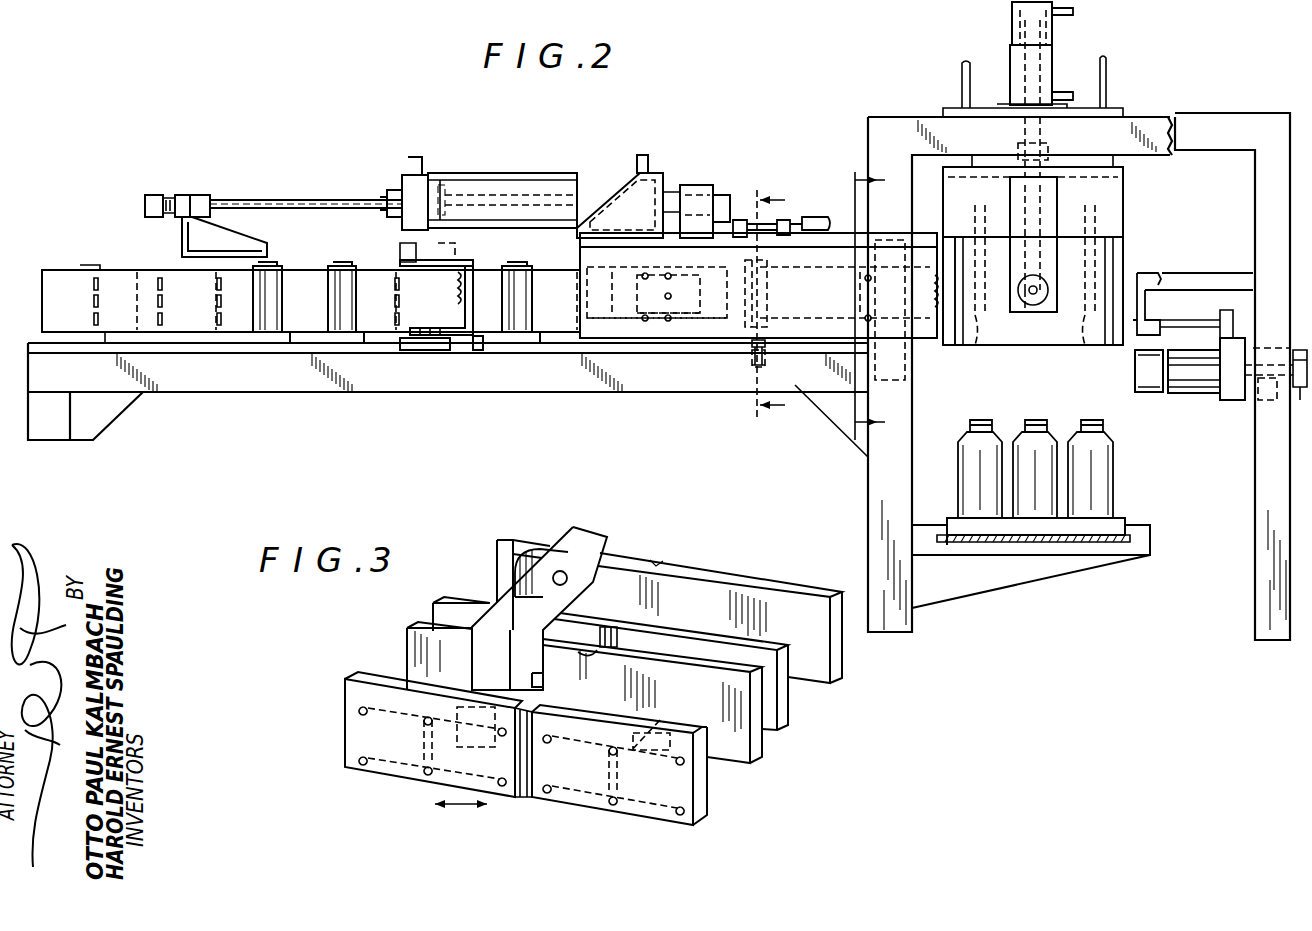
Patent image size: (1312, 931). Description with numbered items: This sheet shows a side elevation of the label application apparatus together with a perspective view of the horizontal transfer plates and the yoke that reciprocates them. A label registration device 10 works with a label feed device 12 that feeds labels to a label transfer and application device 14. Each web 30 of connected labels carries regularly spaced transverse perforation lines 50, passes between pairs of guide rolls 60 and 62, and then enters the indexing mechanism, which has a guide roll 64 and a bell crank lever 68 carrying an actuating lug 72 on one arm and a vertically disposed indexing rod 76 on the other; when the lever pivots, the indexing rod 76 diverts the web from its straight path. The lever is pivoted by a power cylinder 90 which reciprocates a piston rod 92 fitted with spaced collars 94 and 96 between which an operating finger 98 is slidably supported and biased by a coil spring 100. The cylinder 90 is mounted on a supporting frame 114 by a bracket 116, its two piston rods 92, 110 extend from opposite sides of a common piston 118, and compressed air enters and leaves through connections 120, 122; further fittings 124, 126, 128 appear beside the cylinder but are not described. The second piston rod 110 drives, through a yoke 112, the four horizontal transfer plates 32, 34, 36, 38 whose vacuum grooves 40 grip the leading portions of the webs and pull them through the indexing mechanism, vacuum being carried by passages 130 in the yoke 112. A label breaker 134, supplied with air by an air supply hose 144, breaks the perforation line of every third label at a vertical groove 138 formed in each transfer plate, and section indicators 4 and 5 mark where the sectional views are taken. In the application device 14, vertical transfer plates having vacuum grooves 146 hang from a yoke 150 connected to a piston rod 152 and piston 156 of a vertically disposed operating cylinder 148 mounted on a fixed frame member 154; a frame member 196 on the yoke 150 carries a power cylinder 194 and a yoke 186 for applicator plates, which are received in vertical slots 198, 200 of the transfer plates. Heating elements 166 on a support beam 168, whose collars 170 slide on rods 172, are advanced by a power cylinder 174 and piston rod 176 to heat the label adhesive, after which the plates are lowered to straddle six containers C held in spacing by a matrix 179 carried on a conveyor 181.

In FIG. 2, the label registration device 10 is at (365, 178).
In FIG. 2, the label feed device 12 is at (852, 167).
In FIG. 2, the label transfer and application device 14 is at (1148, 98).
In FIG. 2, the web 30 is at (550, 315).
In FIG. 3, the horizontal transfer plate 32 is at (842, 674).
In FIG. 3, the horizontal transfer plate 34 is at (790, 727).
In FIG. 3, the horizontal transfer plate 36 is at (763, 758).
In FIG. 2, the horizontal transfer plate 38 is at (628, 335).
In FIG. 3, the horizontal transfer plate 38 is at (703, 817).
In FIG. 2, the vacuum grooves 40 is at (686, 335).
In FIG. 3, the vacuum grooves 40 is at (388, 768).
In FIG. 2, the perforation lines 50 is at (164, 300).
In FIG. 2, the guide roll 60 is at (273, 266).
In FIG. 2, the guide roll 62 is at (344, 266).
In FIG. 2, the guide roll 64 is at (412, 320).
In FIG. 2, the bell crank lever 68 is at (458, 260).
In FIG. 2, the actuating lug 72 is at (400, 246).
In FIG. 2, the indexing rod 76 is at (468, 290).
In FIG. 2, the power cylinder 90 is at (528, 172).
In FIG. 2, the piston rod 92 is at (288, 198).
In FIG. 2, the collar 94 is at (156, 195).
In FIG. 2, the collar 96 is at (203, 194).
In FIG. 2, the operating finger 98 is at (225, 235).
In FIG. 2, the coil spring 100 is at (170, 195).
In FIG. 2, the second piston rod 110 is at (672, 192).
In FIG. 2, the yoke 112 is at (700, 186).
In FIG. 3, the yoke 112 is at (588, 540).
In FIG. 2, the supporting frame 114 is at (590, 245).
In FIG. 2, the bracket 116 is at (615, 200).
In FIG. 2, the piston 118 is at (452, 172).
In FIG. 2, the connection 120 is at (412, 165).
In FIG. 2, the connection 122 is at (650, 160).
In FIG. 2, the hose fitting 124 is at (822, 217).
In FIG. 2, the section line 126 is at (757, 200).
In FIG. 2, the elbow fitting 128 is at (792, 235).
In FIG. 3, the passages 130 is at (747, 634).
In FIG. 2, the label breaker 134 is at (757, 370).
In FIG. 3, the groove 138 is at (667, 567).
In FIG. 2, the air supply hose 144 is at (768, 358).
In FIG. 2, the vacuum grooves 146 is at (1124, 218).
In FIG. 2, the operating cylinder 148 is at (1052, 65).
In FIG. 2, the yoke 150 is at (1035, 175).
In FIG. 2, the piston rod 152 is at (1010, 70).
In FIG. 2, the frame member 154 is at (1245, 112).
In FIG. 2, the piston 156 is at (1052, 32).
In FIG. 2, the heating elements 166 is at (1205, 395).
In FIG. 2, the support beam 168 is at (1238, 402).
In FIG. 2, the collars 170 is at (1240, 308).
In FIG. 2, the rods 172 is at (1213, 320).
In FIG. 2, the power cylinder 174 is at (1292, 395).
In FIG. 2, the piston rod 176 is at (1292, 440).
In FIG. 2, the matrix 179 is at (1062, 530).
In FIG. 2, the conveyor 181 is at (1112, 542).
In FIG. 2, the yoke 186 is at (960, 345).
In FIG. 2, the power cylinder 194 is at (1047, 330).
In FIG. 2, the frame member 196 is at (1060, 185).
In FIG. 2, the vertical slot 198 is at (995, 330).
In FIG. 2, the vertical slot 200 is at (1078, 328).
In FIG. 2, the containers C is at (1110, 475).
In FIG. 2, the section line 4 is at (878, 312).
In FIG. 2, the section line 5 is at (783, 307).